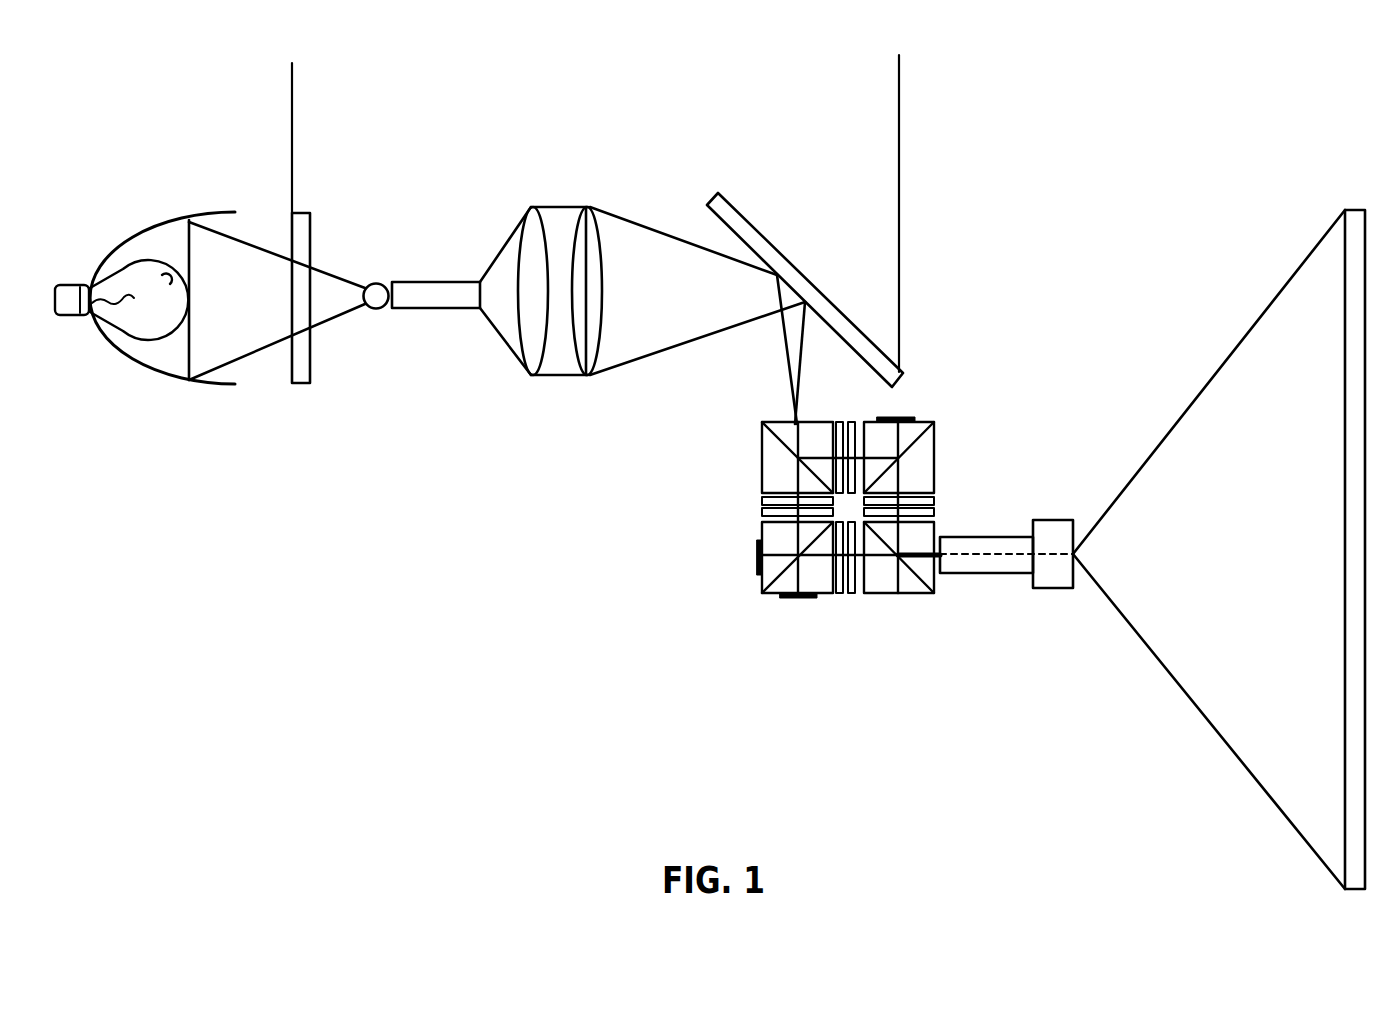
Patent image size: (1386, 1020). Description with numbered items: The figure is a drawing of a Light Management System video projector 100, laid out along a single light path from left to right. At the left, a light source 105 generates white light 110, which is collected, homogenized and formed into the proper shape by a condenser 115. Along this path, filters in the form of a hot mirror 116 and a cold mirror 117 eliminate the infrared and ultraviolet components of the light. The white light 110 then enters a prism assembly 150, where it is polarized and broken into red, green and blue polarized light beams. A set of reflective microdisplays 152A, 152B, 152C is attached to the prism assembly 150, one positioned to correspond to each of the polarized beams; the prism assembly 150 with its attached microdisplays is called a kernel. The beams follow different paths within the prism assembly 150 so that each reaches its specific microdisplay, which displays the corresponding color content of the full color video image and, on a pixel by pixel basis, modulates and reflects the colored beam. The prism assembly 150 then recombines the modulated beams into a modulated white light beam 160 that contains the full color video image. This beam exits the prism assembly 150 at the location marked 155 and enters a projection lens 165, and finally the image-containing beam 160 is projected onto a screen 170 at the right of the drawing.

The video projector 100 is at (450, 600).
The light source 105 is at (177, 320).
The white light 110 is at (258, 333).
The condenser 115 is at (294, 100).
The hot mirror 116 is at (303, 385).
The cold mirror 117 is at (797, 274).
The prism assembly 150 is at (886, 614).
The reflective microdisplay 152A is at (906, 417).
The reflective microdisplay 152B is at (757, 558).
The reflective microdisplay 152C is at (793, 598).
The output light beam 155 is at (946, 520).
The modulated white light beam 160 is at (991, 551).
The projection lens 165 is at (1060, 505).
The screen 170 is at (1356, 218).